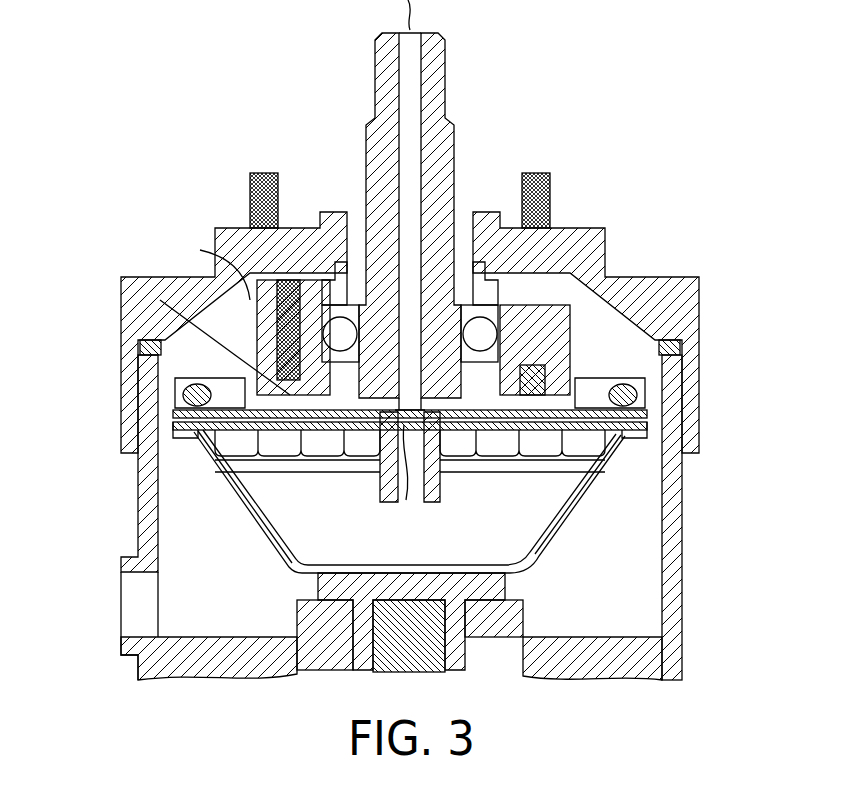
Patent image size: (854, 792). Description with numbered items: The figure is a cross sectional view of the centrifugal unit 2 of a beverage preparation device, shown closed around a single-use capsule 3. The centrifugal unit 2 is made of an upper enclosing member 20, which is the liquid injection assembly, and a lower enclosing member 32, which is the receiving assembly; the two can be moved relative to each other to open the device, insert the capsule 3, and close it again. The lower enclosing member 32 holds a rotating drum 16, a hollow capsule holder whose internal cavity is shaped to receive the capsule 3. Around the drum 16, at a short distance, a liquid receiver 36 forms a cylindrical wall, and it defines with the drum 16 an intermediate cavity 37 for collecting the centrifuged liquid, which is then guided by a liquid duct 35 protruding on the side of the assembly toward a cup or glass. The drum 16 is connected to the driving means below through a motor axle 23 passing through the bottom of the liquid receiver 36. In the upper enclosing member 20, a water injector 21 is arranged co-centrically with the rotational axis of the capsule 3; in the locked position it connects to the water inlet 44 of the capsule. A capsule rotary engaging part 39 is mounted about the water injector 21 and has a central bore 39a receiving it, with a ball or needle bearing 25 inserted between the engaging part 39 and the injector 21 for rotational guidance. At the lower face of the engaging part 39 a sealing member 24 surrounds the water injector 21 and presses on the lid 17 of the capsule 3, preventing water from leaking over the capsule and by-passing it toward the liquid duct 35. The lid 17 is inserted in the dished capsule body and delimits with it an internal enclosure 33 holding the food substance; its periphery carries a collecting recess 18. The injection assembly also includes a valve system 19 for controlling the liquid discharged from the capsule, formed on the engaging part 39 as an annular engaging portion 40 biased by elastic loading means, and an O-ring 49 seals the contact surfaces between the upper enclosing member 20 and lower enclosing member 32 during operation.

The centrifugal unit 2 is at (693, 600).
The capsule 3 is at (568, 530).
The rotating drum 16 is at (584, 539).
The lid 17 is at (648, 470).
The collecting recess 18 is at (648, 438).
The valve system 19 is at (648, 396).
The upper enclosing member 20 is at (712, 33).
The water injector 21 is at (456, 140).
The motor axle 23 is at (413, 667).
The sealing member 24 is at (152, 292).
The ball or needle bearing 25 is at (474, 318).
The lower enclosing member 32 is at (77, 355).
The internal enclosure 33 is at (270, 520).
The liquid duct 35 is at (135, 605).
The liquid receiver 36 is at (672, 568).
The intermediate cavity 37 is at (650, 622).
The capsule rotary engaging part 39 is at (590, 333).
The central bore 39a is at (247, 300).
The annular engaging portion 40 is at (175, 407).
The water inlet 44 is at (412, 503).
The O-ring 49 is at (140, 343).